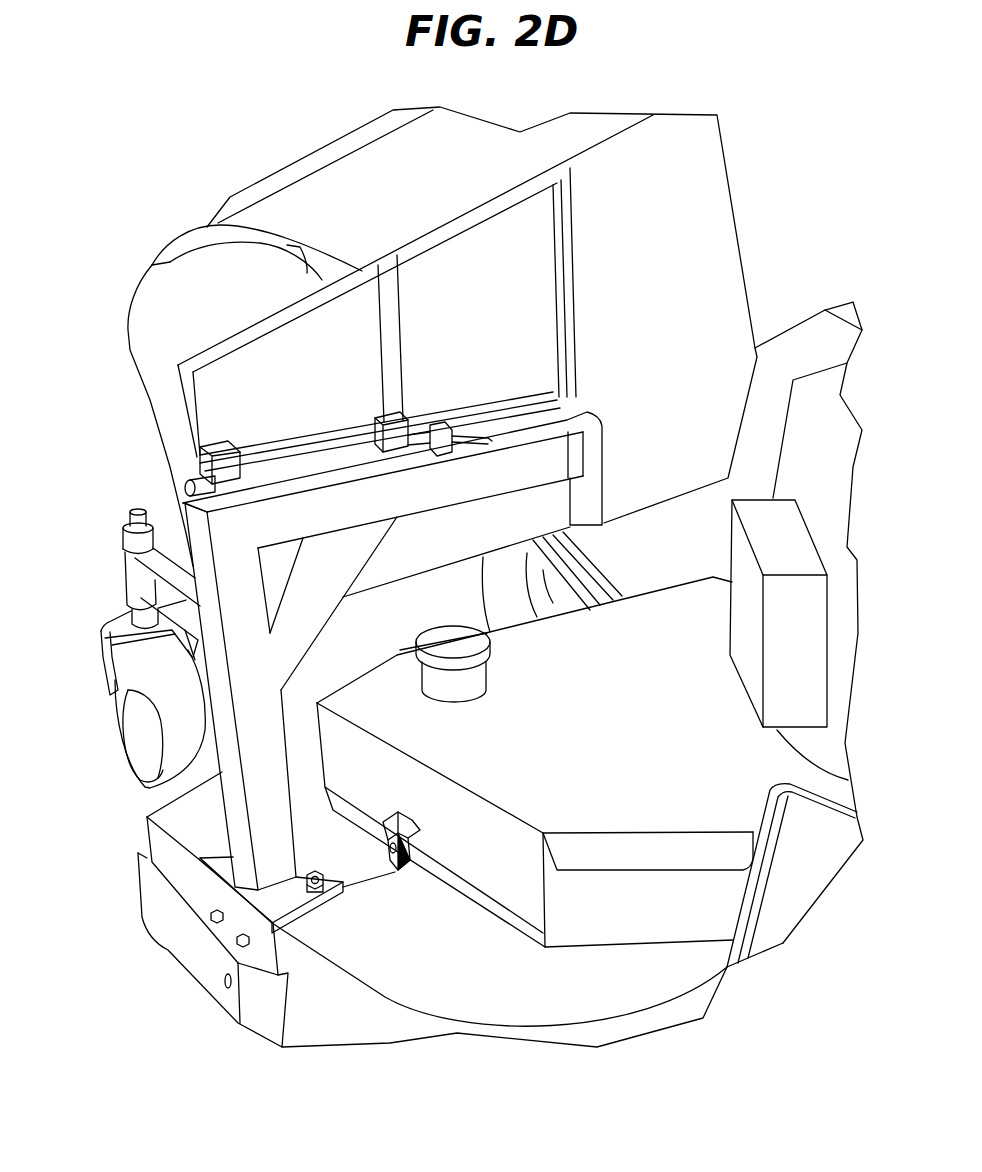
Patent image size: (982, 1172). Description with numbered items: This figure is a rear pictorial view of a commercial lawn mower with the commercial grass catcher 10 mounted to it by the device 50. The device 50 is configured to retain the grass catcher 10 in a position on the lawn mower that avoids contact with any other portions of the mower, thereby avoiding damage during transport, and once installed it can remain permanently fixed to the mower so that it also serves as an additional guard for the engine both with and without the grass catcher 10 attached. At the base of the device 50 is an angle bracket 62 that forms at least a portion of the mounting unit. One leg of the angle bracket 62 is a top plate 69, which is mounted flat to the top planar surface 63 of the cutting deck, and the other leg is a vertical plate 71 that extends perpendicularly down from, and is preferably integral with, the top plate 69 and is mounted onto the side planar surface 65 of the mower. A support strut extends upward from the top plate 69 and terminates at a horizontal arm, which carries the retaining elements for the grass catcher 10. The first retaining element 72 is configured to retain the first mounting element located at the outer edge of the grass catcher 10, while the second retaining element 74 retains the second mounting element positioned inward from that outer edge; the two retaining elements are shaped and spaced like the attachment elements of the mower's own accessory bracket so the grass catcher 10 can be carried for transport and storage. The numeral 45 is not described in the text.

The grass catcher 10 is at (611, 130).
The support beam 45 is at (183, 519).
The device 50 is at (138, 512).
The angle bracket 62 is at (181, 831).
The top planar surface 63 is at (520, 1009).
The side planar surface 65 is at (320, 1013).
The top plate 69 is at (185, 852).
The vertical plate 71 is at (238, 917).
The first retaining element 72 is at (192, 488).
The second retaining element 74 is at (385, 420).